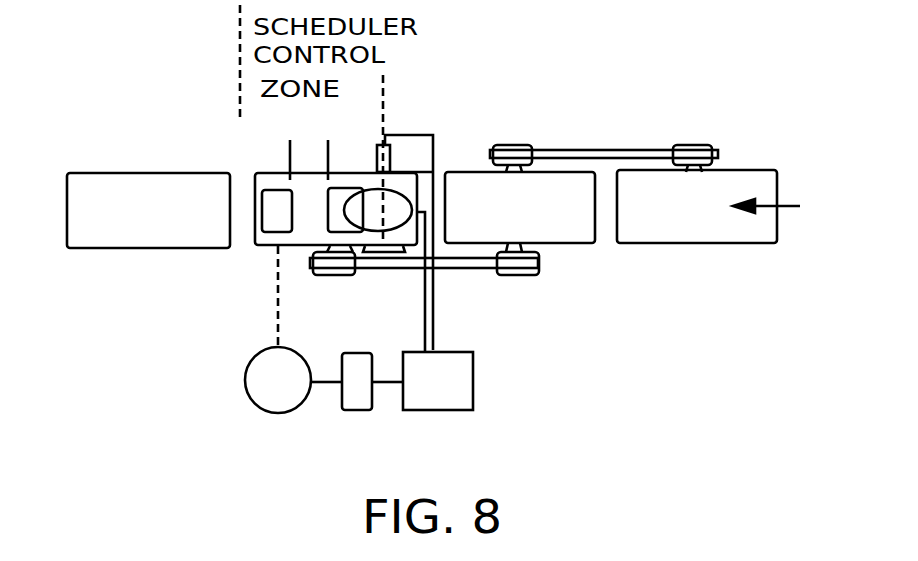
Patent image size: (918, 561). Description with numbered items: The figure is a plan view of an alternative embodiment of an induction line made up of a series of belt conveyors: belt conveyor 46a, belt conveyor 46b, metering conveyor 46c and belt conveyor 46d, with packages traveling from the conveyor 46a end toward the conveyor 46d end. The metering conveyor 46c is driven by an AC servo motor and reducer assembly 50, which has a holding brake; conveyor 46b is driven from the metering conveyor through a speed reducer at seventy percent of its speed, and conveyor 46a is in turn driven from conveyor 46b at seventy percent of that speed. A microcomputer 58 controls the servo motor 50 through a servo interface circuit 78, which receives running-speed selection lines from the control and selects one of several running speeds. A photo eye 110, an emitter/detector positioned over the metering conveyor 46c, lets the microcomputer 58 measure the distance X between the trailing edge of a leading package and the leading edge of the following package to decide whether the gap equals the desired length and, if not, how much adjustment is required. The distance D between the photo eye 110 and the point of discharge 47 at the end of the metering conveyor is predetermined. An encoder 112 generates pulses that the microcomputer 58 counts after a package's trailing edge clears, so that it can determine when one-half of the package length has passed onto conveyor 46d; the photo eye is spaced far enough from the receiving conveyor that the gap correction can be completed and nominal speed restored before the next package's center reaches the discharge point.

The belt conveyor 46a is at (697, 245).
The belt conveyor 46b is at (560, 245).
The metering conveyor 46c is at (358, 173).
The belt conveyor 46d is at (105, 173).
The point of discharge 47 is at (245, 157).
The AC servo motor and reducer assembly 50 is at (244, 383).
The microcomputer 58 is at (473, 383).
The servo interface circuit 78 is at (355, 410).
The photo eye 110 is at (392, 165).
The encoder 112 is at (375, 229).